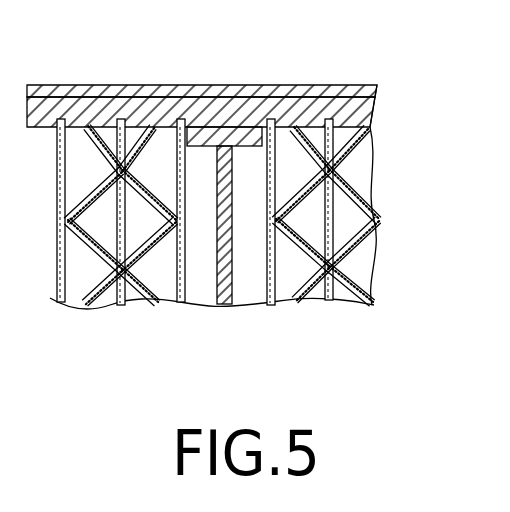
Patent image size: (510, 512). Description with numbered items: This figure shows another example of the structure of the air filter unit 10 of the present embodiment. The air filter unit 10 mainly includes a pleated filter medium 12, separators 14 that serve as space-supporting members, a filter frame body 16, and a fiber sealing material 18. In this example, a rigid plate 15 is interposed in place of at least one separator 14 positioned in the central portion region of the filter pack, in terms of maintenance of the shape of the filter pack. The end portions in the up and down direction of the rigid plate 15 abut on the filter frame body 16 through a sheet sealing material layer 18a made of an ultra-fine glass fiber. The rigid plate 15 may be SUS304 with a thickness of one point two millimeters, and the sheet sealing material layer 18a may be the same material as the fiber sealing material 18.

The air filter unit 10 is at (382, 82).
The pleated filter medium 12 is at (121, 304).
The separators 14 is at (88, 304).
The rigid plate 15 is at (223, 304).
The filter frame body 16 is at (253, 95).
The fiber sealing material 18 is at (370, 102).
The sheet sealing material layer 18a is at (210, 128).